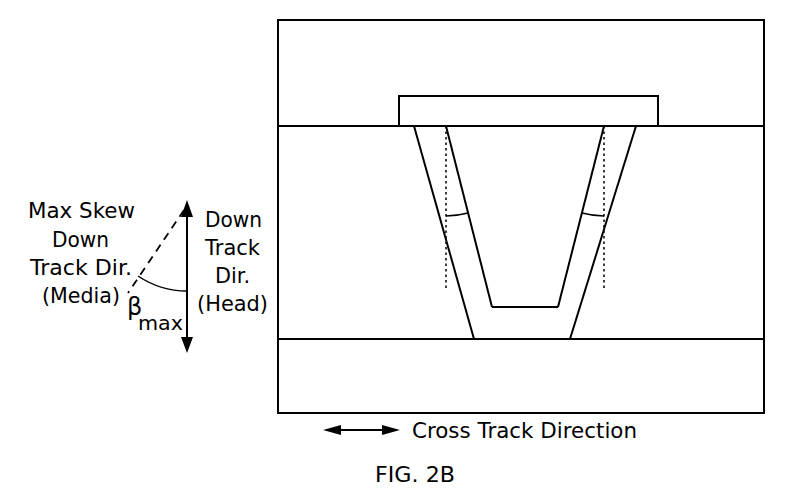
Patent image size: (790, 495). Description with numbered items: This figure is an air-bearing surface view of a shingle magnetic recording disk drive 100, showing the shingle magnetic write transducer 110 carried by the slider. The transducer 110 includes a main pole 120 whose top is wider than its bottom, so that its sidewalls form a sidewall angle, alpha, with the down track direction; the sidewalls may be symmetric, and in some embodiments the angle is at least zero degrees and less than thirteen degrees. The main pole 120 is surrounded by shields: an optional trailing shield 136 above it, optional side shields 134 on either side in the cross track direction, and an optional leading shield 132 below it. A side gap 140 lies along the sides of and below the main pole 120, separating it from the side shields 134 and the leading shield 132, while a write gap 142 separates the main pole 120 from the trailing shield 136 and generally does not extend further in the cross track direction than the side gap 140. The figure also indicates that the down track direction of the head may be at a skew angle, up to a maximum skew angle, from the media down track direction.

The disk drive 100 is at (469, 210).
The shingle magnetic write transducer 110 is at (469, 210).
The trailing shield 136 is at (521, 82).
The write gap 142 is at (398, 108).
The side shields 134 is at (521, 232).
The main pole 120 is at (525, 216).
The side gap 140 is at (525, 321).
The leading shield 132 is at (521, 370).